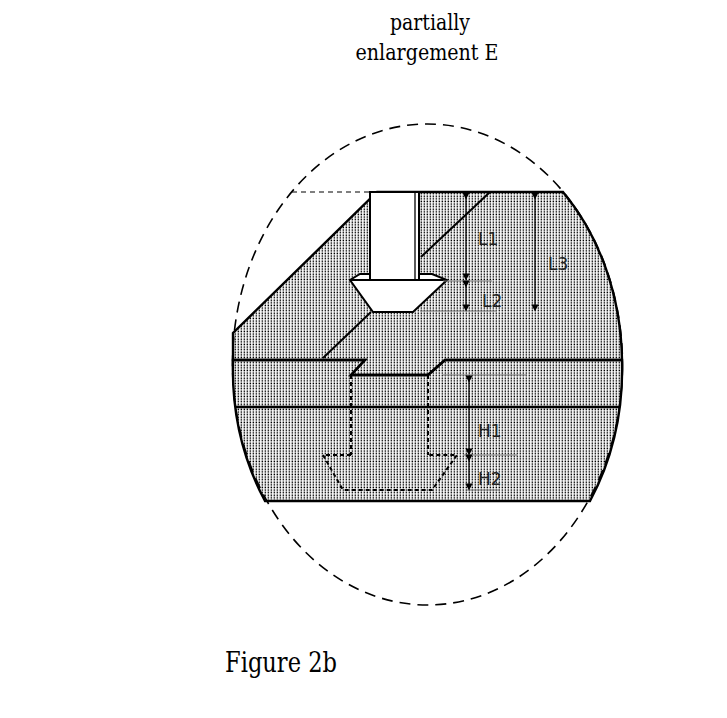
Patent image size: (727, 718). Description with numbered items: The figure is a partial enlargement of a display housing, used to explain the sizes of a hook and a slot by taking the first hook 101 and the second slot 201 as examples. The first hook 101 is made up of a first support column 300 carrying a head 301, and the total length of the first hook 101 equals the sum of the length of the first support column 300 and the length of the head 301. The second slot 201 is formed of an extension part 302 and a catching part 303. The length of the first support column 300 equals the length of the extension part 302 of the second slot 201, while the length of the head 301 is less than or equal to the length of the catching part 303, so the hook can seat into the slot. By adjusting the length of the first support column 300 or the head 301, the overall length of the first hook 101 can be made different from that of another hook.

The first hook 101 is at (115, 317).
The second slot 201 is at (115, 492).
The first support column 300 is at (403, 207).
The head 301 is at (398, 287).
The extension part 302 is at (380, 410).
The catching part 303 is at (380, 465).